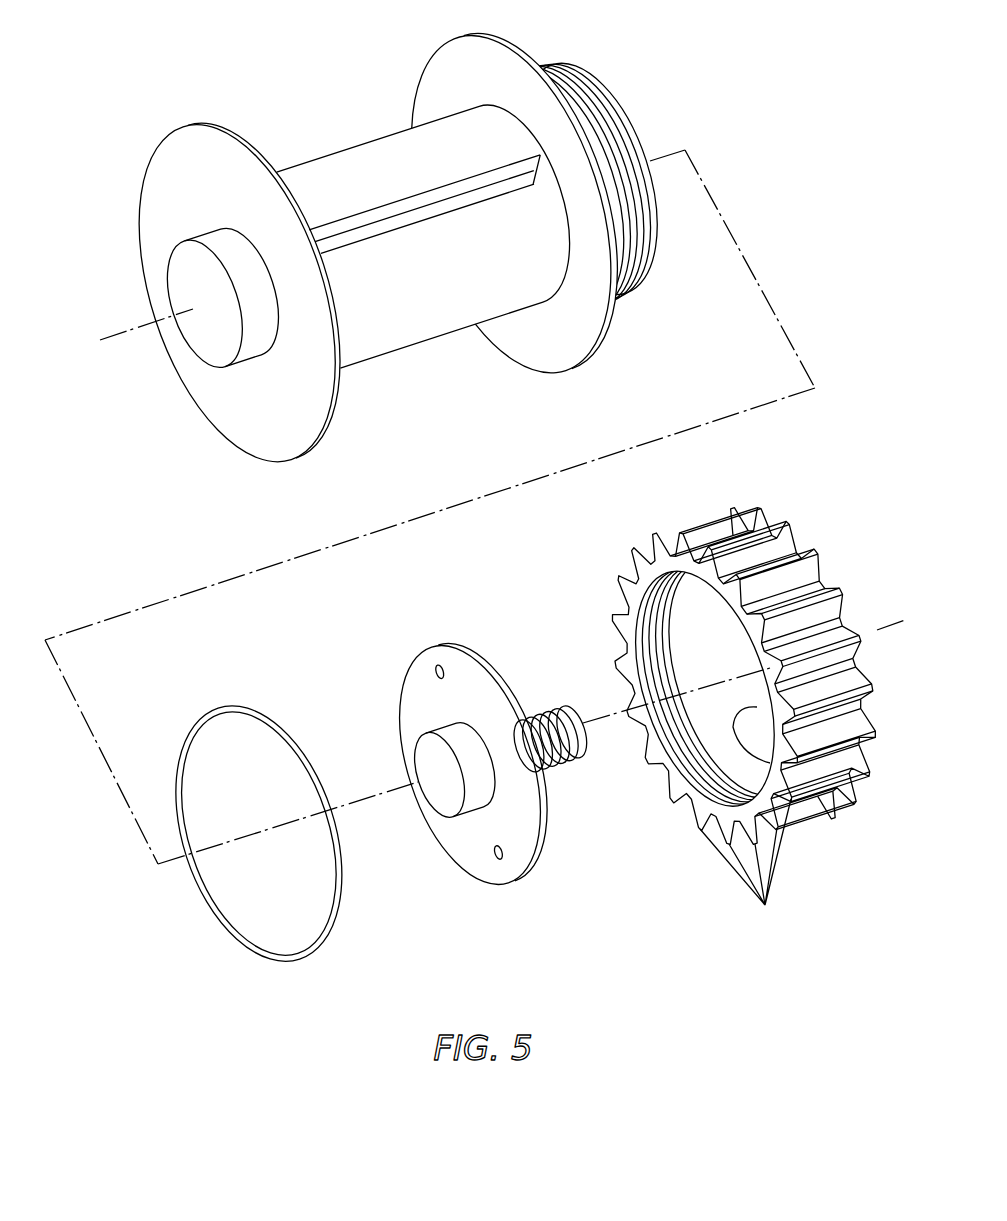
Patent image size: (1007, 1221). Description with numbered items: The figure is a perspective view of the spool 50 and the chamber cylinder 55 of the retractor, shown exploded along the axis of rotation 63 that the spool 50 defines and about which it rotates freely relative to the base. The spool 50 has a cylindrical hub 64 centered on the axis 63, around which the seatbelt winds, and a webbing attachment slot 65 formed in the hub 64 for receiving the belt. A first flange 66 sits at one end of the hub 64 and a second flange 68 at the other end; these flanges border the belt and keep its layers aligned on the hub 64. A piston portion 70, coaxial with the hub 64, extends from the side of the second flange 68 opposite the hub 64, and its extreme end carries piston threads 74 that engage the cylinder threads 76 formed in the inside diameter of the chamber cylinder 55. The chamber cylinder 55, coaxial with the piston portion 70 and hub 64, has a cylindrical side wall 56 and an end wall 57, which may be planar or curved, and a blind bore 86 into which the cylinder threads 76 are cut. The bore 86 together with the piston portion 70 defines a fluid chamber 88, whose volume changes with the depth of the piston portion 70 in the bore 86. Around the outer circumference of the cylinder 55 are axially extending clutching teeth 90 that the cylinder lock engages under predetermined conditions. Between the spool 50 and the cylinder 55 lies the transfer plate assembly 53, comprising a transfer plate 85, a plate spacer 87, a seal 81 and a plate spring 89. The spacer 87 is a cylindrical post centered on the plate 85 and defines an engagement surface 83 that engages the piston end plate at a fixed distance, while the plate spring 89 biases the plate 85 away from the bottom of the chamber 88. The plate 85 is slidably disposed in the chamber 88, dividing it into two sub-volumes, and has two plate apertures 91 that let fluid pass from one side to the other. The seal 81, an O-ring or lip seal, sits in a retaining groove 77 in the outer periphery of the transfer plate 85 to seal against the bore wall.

The spool 50 is at (393, 247).
The transfer plate assembly 53 is at (467, 743).
The chamber cylinder 55 is at (739, 714).
The cylindrical side wall 56 is at (786, 662).
The end wall 57 is at (772, 762).
The axis of rotation 63 is at (902, 622).
The hub 64 is at (399, 350).
The webbing attachment slot 65 is at (386, 236).
The first flange 66 is at (156, 152).
The second flange 68 is at (556, 374).
The piston portion 70 is at (568, 183).
The piston threads 74 is at (616, 299).
The cylinder threads 76 is at (705, 689).
The retaining groove 77 is at (541, 825).
The seal 81 is at (222, 933).
The engagement surface 83 is at (419, 780).
The transfer plate 85 is at (440, 645).
The blind bore 86 is at (696, 692).
The plate spacer 87 is at (409, 745).
The fluid chamber 88 is at (704, 689).
The plate spring 89 is at (554, 716).
The clutching teeth 90 is at (745, 872).
The plate apertures 91 is at (432, 668).